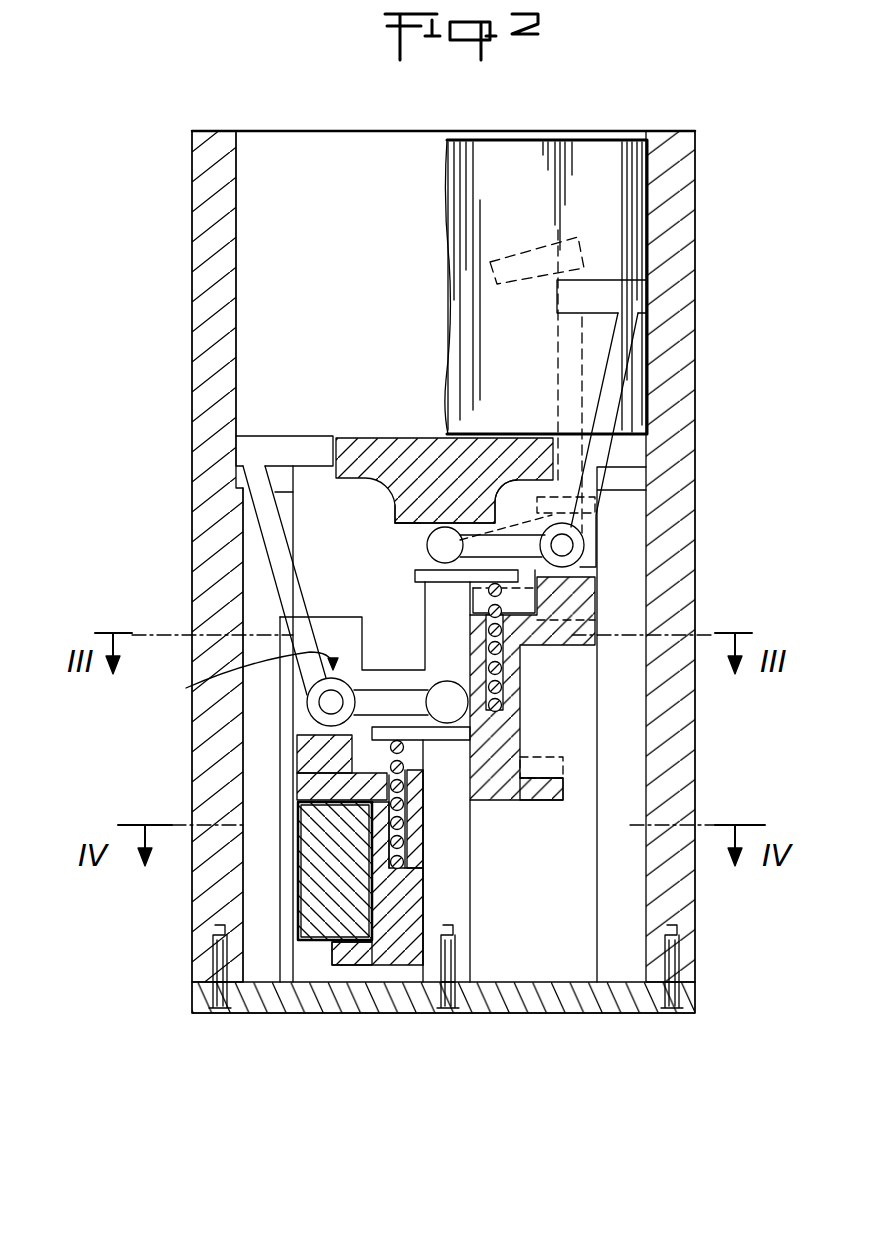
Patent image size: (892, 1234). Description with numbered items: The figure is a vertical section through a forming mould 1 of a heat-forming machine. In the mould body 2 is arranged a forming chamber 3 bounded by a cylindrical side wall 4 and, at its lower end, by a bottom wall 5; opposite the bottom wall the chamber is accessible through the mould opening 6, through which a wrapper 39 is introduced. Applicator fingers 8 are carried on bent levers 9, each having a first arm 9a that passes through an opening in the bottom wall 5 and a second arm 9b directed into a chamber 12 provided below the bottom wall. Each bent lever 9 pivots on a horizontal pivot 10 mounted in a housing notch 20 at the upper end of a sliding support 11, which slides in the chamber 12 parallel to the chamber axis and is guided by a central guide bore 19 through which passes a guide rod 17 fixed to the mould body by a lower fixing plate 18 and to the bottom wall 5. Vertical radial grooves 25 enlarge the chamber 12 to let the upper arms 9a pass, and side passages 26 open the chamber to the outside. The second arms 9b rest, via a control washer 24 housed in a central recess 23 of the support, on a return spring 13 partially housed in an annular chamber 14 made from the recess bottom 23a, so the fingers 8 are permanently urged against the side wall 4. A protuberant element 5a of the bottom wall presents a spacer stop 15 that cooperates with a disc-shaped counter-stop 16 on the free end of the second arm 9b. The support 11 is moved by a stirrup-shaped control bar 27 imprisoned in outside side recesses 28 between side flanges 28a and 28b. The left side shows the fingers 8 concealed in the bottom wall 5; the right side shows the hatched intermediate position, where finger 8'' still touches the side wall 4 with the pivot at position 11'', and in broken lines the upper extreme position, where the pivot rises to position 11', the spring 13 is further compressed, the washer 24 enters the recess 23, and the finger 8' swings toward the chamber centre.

The forming mould 1 is at (192, 312).
The mould body 2 is at (190, 196).
The forming chamber 3 is at (360, 250).
The side wall 4 is at (240, 322).
The bottom wall 5 is at (356, 454).
The protuberant element 5a is at (420, 512).
The mould opening 6 is at (310, 130).
The applicator finger 8 is at (284, 446).
The applicator finger in upper extreme position 8' is at (537, 244).
The applicator finger in intermediate position 8'' is at (653, 295).
The bent lever 9 is at (292, 635).
The first arm 9a is at (268, 523).
The second arm 9b is at (388, 688).
The pivot 10 is at (322, 706).
The sliding support 11 is at (377, 934).
The pivot upper position 11' is at (527, 385).
The pivot intermediate position 11'' is at (654, 545).
The chamber 12 is at (560, 922).
The return spring 13 is at (392, 745).
The annular chamber 14 is at (399, 814).
The spacer stop 15 is at (400, 526).
The counter-stop 16 is at (430, 558).
The guide rod 17 is at (462, 950).
The lower fixing plate 18 is at (574, 996).
The central guide bore 19 is at (424, 888).
The housing notch 20 is at (242, 679).
The central recess 23 is at (366, 772).
The bottom of central recess 23a is at (414, 768).
The control washer 24 is at (420, 588).
The vertical radial groove 25 is at (250, 596).
The side passage 26 is at (336, 620).
The control bar 27 is at (350, 882).
The outside side recess 28 is at (364, 896).
The side flange 28a is at (568, 645).
The side flange 28b is at (344, 958).
The wrapper 39 is at (614, 150).